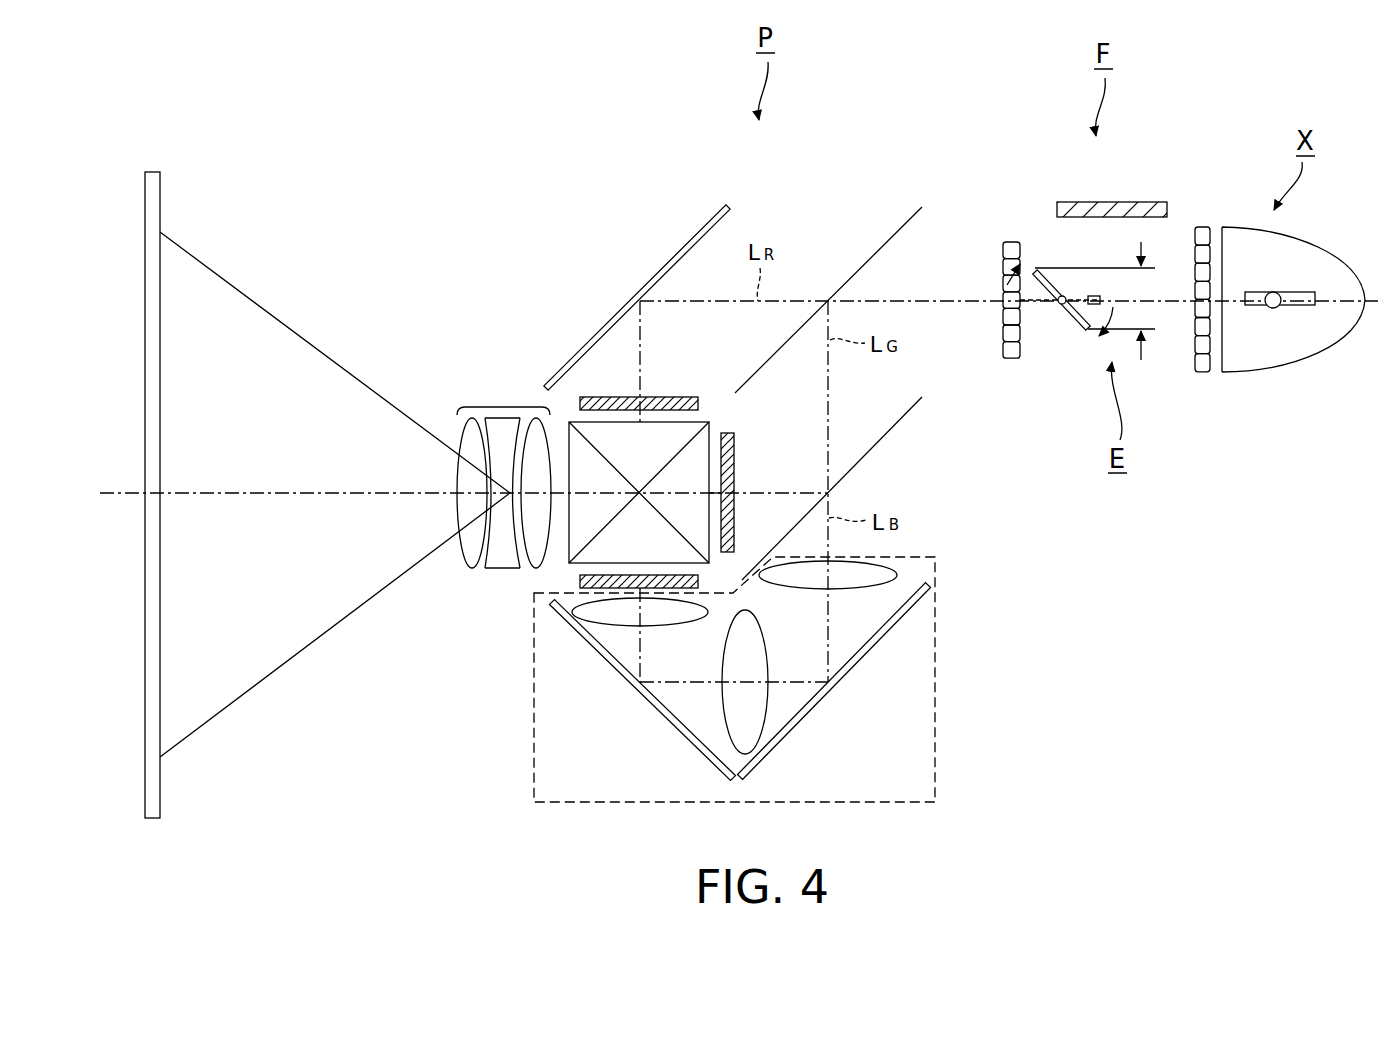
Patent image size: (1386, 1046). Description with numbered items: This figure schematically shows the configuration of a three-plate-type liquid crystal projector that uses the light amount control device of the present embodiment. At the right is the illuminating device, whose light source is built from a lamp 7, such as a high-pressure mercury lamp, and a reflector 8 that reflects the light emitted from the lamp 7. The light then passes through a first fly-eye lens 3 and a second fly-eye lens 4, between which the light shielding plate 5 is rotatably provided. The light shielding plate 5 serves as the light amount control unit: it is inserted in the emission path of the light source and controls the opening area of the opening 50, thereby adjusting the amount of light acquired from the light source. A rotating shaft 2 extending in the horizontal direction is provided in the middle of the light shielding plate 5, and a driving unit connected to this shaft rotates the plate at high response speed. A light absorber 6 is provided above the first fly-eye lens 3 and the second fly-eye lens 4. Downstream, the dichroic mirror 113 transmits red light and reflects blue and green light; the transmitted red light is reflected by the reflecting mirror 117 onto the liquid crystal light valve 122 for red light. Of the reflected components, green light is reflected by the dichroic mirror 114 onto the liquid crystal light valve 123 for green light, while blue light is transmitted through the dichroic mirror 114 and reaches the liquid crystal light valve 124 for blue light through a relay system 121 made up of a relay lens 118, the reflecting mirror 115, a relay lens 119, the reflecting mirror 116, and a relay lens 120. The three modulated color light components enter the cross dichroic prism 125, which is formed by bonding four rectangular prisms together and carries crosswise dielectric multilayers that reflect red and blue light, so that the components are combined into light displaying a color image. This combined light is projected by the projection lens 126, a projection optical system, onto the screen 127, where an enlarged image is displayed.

The rotating shaft 2 is at (1059, 305).
The first fly-eye lens 3 is at (1200, 227).
The second fly-eye lens 4 is at (1010, 242).
The light shielding plate 5 is at (1079, 320).
The light absorber 6 is at (1128, 202).
The lamp 7 is at (1273, 308).
The reflector 8 is at (1330, 345).
The opening 50 is at (1154, 320).
The dichroic mirror 113 is at (880, 250).
The dichroic mirror 114 is at (918, 400).
The reflecting mirror 115 is at (880, 643).
The reflecting mirror 116 is at (680, 737).
The reflecting mirror 117 is at (663, 260).
The relay lens 118 is at (887, 570).
The relay lens 119 is at (758, 700).
The relay lens 120 is at (592, 612).
The relay system 121 is at (938, 722).
The liquid crystal light valve 122 is at (657, 397).
The liquid crystal light valve 123 is at (735, 470).
The liquid crystal light valve 124 is at (580, 586).
The cross dichroic prism 125 is at (588, 527).
The projection lens 126 is at (497, 407).
The screen 127 is at (162, 708).